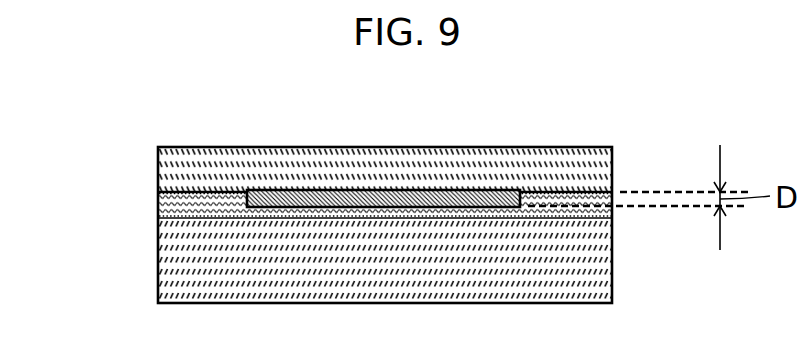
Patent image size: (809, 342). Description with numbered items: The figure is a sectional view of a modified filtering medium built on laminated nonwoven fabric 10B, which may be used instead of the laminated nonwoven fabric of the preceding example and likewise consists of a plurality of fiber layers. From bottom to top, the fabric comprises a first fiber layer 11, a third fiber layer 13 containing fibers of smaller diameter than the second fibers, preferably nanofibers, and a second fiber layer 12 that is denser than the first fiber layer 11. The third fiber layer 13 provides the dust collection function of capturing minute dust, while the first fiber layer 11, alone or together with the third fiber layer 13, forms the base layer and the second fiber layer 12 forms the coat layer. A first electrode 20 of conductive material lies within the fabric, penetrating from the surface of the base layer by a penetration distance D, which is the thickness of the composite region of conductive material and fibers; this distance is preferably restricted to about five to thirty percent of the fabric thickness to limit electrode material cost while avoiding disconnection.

The laminated nonwoven fabric 10B is at (92, 145).
The first fiber layer 11 is at (177, 267).
The second fiber layer 12 is at (170, 173).
The third fiber layer 13 is at (168, 211).
The first electrode 20 is at (427, 189).